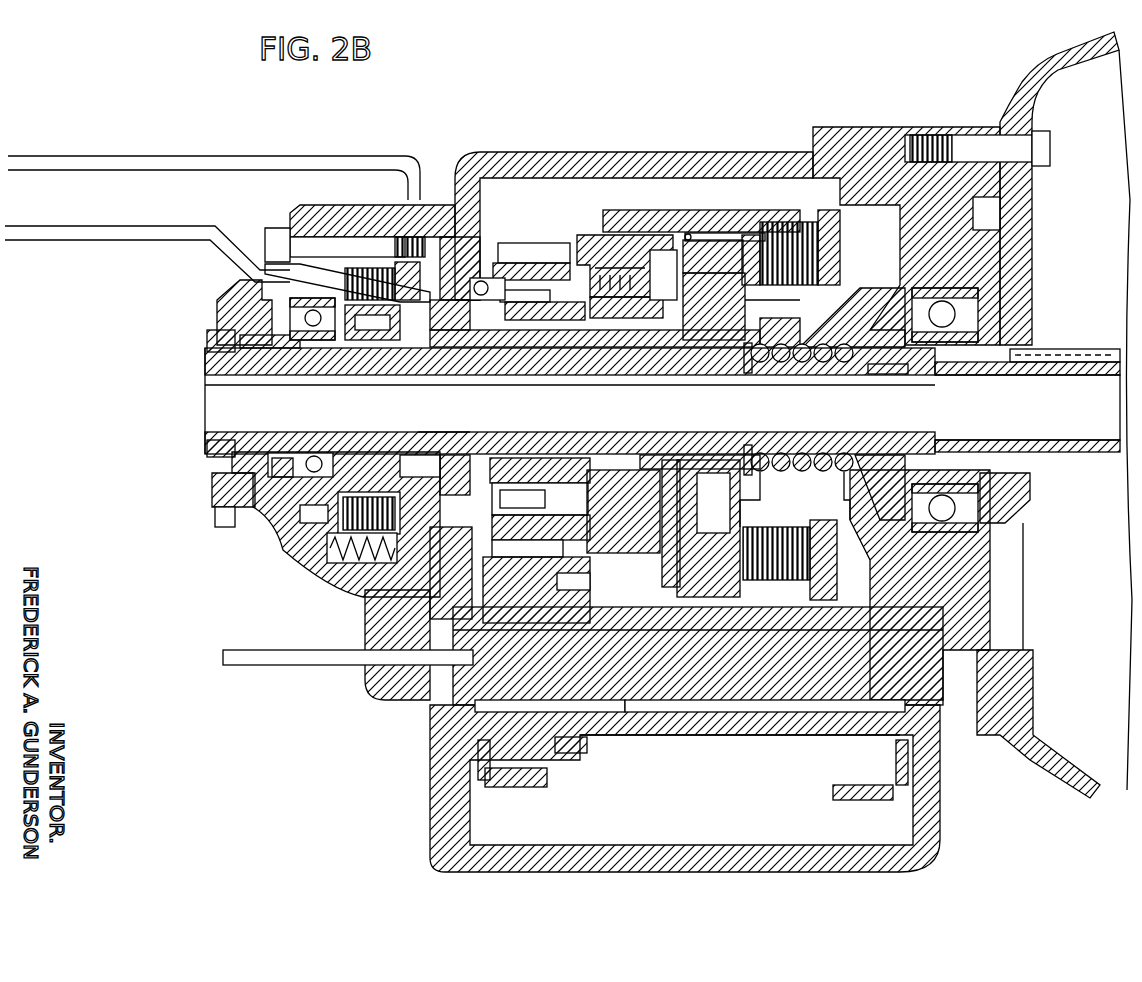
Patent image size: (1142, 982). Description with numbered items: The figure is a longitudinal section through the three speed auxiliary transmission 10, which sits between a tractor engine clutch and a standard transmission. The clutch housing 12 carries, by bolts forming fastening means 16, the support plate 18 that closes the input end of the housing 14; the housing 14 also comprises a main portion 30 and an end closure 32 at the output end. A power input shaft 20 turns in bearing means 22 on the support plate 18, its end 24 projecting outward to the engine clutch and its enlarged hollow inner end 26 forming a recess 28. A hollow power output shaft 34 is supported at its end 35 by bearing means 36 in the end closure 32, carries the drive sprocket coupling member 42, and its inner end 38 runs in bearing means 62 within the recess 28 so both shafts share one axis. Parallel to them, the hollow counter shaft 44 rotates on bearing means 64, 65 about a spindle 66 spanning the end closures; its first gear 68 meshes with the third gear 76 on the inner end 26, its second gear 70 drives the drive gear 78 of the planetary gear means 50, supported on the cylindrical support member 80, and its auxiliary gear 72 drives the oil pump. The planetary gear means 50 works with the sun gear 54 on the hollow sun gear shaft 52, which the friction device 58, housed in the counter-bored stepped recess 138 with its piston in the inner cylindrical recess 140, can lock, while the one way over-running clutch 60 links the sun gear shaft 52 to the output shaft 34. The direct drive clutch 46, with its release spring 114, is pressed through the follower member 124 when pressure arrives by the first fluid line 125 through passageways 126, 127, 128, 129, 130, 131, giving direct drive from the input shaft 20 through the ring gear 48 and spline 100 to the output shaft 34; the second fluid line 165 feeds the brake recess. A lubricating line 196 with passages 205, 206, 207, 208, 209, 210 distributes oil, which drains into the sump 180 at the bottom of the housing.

The auxiliary transmission 10 is at (486, 130).
The clutch housing 12 is at (1065, 76).
The housing 14 is at (711, 212).
The fastening means 16 is at (1050, 152).
The support plate 18 is at (1030, 290).
The power input shaft 20 is at (986, 374).
The bearing means 22 is at (1020, 516).
The end of input shaft 24 is at (1078, 352).
The inner end of input shaft 26 is at (861, 283).
The recess 28 is at (802, 333).
The main portion of housing 30 is at (672, 162).
The housing end closure 32 is at (378, 694).
The power output shaft 34 is at (418, 430).
The end of output shaft 35 is at (270, 350).
The bearing means 36 is at (315, 342).
The inner end of output shaft 38 is at (792, 364).
The coupling member 42 is at (225, 300).
The counter shaft 44 is at (685, 788).
The direct drive clutch 46 is at (805, 222).
The ring gear 48 is at (660, 212).
The planetary gear means 50 is at (572, 232).
The sun gear shaft 52 is at (548, 470).
The sun gear 54 is at (628, 480).
The friction device 58 is at (370, 470).
The one way over-running clutch 60 is at (375, 342).
The bearing means 62 is at (876, 376).
The bearing means 64 is at (495, 782).
The bearing means 65 is at (898, 770).
The spindle 66 is at (705, 736).
The first gear 68 is at (834, 801).
The second gear 70 is at (532, 788).
The auxiliary gear 72 is at (572, 754).
The third gear 76 is at (883, 232).
The drive gear 78 is at (515, 245).
The cylindrical support member 80 is at (540, 262).
The spline 100 is at (735, 212).
The release spring 114 is at (822, 472).
The follower member 124 is at (740, 592).
The first fluid line 125 is at (125, 157).
The passageway 126 is at (452, 232).
The passageway 127 is at (440, 332).
The passageway 128 is at (518, 322).
The passageway 129 is at (482, 300).
The passageway 130 is at (615, 348).
The passageway 131 is at (692, 350).
The counter-bored stepped recess 138 is at (338, 226).
The inner cylindrical recess 140 is at (232, 282).
The second fluid line 165 is at (112, 232).
The sump 180 is at (740, 831).
The lubricating line 196 is at (265, 664).
The passage 205 is at (353, 583).
The passage 206 is at (445, 572).
The passage 207 is at (486, 458).
The passage 208 is at (670, 456).
The passage 209 is at (600, 712).
The passage 210 is at (672, 712).